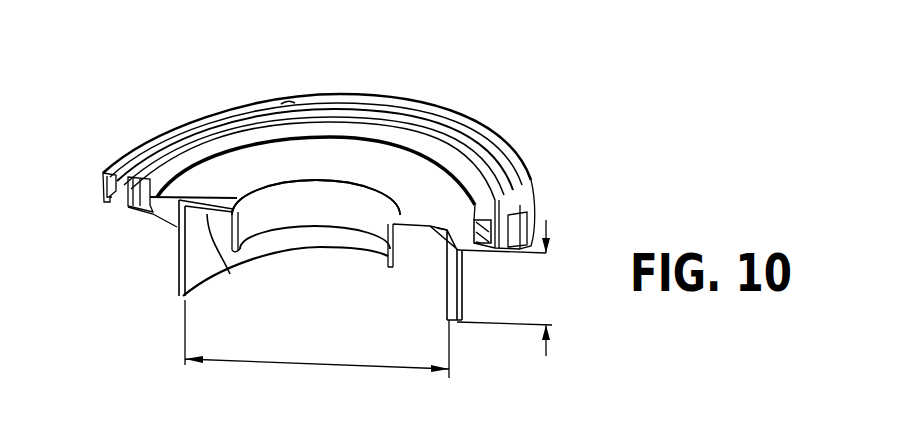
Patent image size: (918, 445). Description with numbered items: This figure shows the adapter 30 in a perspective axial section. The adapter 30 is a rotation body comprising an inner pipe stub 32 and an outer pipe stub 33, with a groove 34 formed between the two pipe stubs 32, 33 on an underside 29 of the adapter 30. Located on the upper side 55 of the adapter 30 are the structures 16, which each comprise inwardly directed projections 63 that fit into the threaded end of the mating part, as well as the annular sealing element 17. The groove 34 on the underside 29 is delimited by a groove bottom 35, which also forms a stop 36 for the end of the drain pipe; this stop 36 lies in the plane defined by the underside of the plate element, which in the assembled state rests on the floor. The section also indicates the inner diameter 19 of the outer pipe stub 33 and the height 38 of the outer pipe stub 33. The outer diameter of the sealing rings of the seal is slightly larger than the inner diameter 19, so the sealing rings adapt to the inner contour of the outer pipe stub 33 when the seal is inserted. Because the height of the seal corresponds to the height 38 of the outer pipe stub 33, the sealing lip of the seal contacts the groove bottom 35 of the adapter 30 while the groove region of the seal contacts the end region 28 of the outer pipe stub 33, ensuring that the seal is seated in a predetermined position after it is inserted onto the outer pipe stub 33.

The adapter 30 is at (143, 78).
The upper side 55 is at (333, 82).
The annular sealing element 17 is at (455, 130).
The structures 16 is at (527, 203).
The inwardly directed projections 63 is at (617, 104).
The underside 29 is at (150, 228).
The outer pipe stub 33 is at (181, 280).
The end region 28 is at (176, 300).
The groove bottom 35 is at (219, 255).
The stop 36 is at (316, 197).
The inner pipe stub 32 is at (388, 256).
The groove 34 is at (427, 245).
The height 38 is at (515, 288).
The inner diameter 19 is at (317, 339).